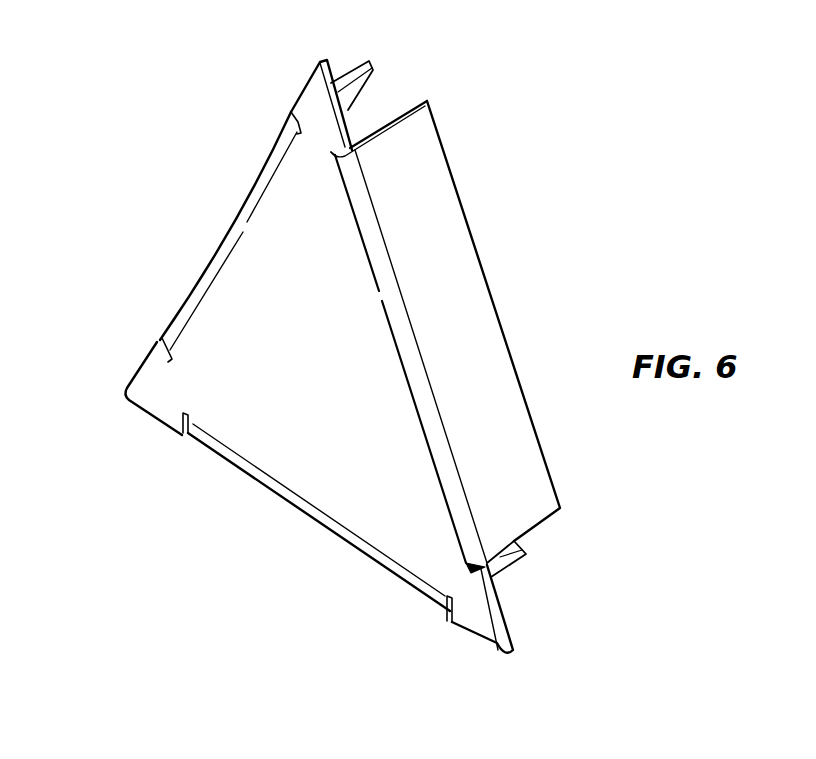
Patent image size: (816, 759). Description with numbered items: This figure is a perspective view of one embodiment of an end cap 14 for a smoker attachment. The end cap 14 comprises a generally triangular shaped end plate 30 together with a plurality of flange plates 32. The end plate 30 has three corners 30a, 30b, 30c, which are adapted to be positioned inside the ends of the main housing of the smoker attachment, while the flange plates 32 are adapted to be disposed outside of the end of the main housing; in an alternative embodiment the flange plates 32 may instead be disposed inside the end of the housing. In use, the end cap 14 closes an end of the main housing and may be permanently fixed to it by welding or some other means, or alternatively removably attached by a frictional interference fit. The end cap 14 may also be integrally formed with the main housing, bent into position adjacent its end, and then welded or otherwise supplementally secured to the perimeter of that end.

The end cap 14 is at (573, 127).
The end plate 30 is at (325, 423).
The corner 30a is at (315, 80).
The corner 30b is at (493, 643).
The corner 30c is at (137, 395).
The flange plate 32 is at (353, 95).